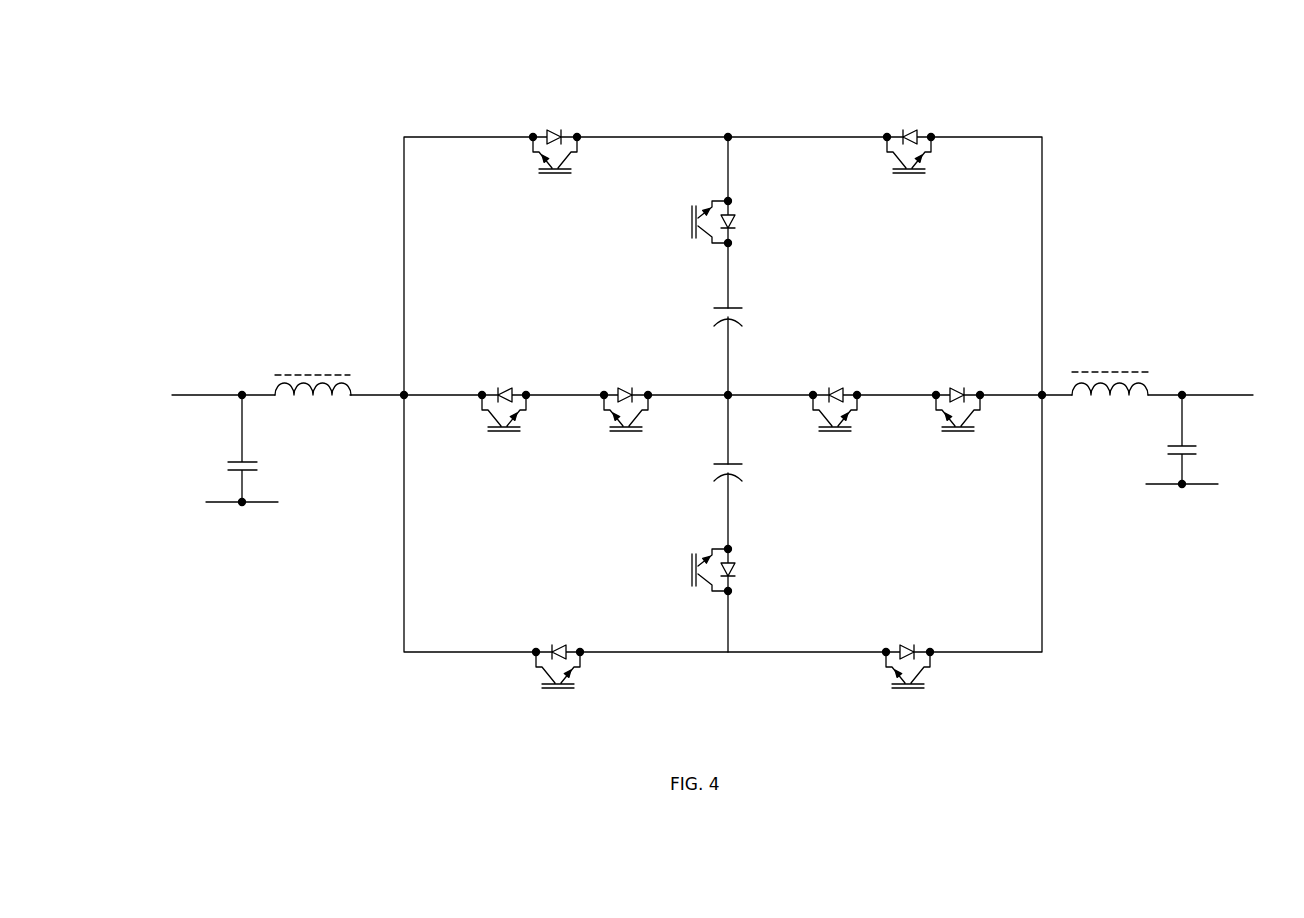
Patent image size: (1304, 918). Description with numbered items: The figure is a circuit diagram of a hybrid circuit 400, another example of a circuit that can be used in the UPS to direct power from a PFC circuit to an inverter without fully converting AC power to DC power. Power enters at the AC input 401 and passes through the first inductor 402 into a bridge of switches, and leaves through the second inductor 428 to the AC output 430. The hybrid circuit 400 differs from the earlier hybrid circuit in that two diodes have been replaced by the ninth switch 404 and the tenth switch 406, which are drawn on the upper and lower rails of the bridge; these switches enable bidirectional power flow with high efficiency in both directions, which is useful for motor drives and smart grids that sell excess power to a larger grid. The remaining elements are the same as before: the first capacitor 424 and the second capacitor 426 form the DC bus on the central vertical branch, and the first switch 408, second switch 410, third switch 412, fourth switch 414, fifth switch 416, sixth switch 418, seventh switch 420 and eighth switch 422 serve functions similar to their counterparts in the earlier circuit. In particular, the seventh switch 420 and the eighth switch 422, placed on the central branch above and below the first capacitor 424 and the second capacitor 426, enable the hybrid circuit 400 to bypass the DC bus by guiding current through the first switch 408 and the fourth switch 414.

The hybrid circuit 400 is at (1140, 182).
The AC input 401 is at (200, 372).
The inductor L1 402 is at (312, 368).
The switch S9 404 is at (557, 126).
The switch S10 406 is at (559, 640).
The switch S1 408 is at (910, 126).
The switch S2 410 is at (958, 380).
The switch S3 412 is at (835, 380).
The switch S4 414 is at (908, 640).
The switch S5 416 is at (505, 380).
The switch S6 418 is at (626, 380).
The switch S7 420 is at (680, 238).
The switch S8 422 is at (680, 556).
The capacitor C1 424 is at (752, 335).
The capacitor C2 426 is at (750, 487).
The inductor L2 428 is at (1110, 365).
The AC output 430 is at (1218, 365).